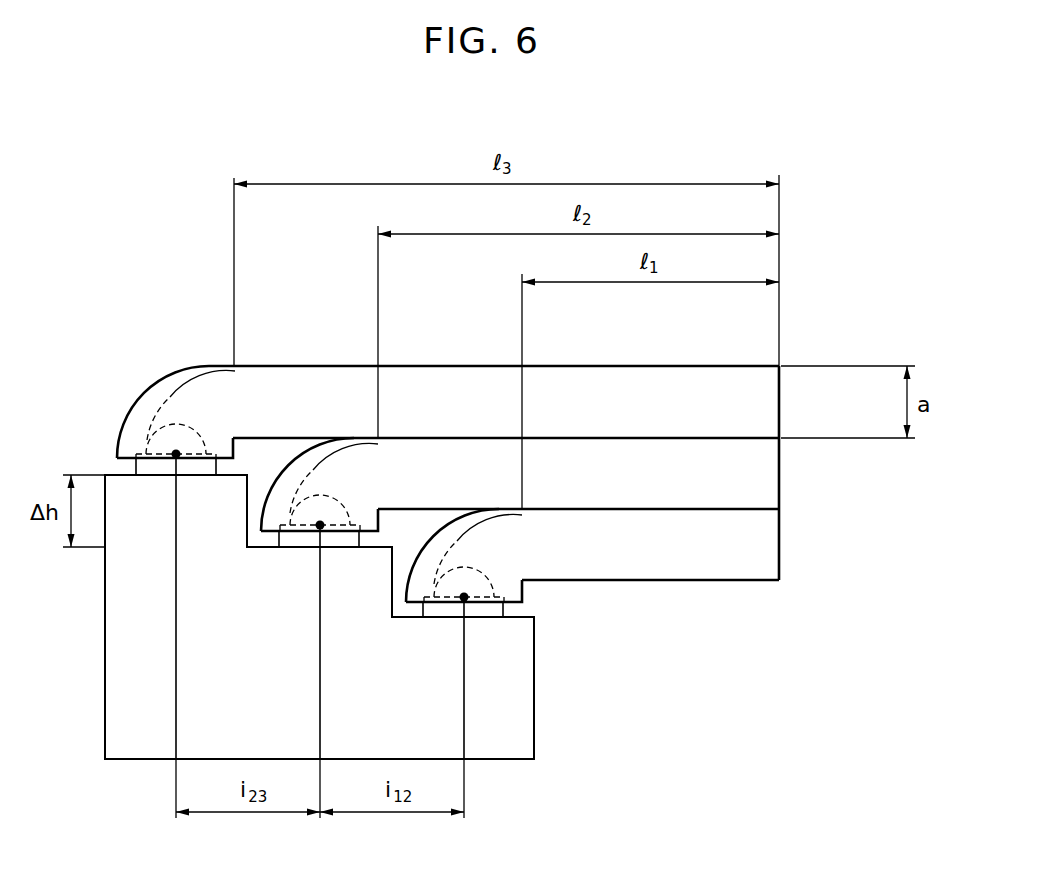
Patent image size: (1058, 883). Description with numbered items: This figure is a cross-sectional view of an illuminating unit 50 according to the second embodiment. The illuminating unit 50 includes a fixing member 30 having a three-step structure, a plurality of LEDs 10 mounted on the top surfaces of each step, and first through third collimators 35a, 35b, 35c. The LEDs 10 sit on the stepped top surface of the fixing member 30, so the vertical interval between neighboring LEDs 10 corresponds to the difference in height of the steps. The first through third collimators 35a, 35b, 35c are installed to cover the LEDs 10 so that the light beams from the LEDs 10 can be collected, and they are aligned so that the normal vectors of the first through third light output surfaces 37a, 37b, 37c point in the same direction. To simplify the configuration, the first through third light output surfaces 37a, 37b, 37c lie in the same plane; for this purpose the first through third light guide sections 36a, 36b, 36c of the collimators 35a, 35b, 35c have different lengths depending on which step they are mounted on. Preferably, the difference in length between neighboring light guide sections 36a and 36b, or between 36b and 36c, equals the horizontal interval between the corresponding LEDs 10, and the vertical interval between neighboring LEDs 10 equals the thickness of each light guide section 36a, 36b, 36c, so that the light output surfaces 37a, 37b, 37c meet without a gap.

The LED 10 is at (176, 426).
The fixing member 30 is at (127, 692).
The illuminating unit 50 is at (470, 439).
The first collimator 35a is at (699, 592).
The second collimator 35b is at (596, 497).
The third collimator 35c is at (745, 358).
The first light guide section 36a is at (592, 569).
The second light guide section 36b is at (520, 498).
The third light guide section 36c is at (448, 412).
The first light output surface 37a is at (781, 545).
The second light output surface 37b is at (781, 475).
The third light output surface 37c is at (781, 403).